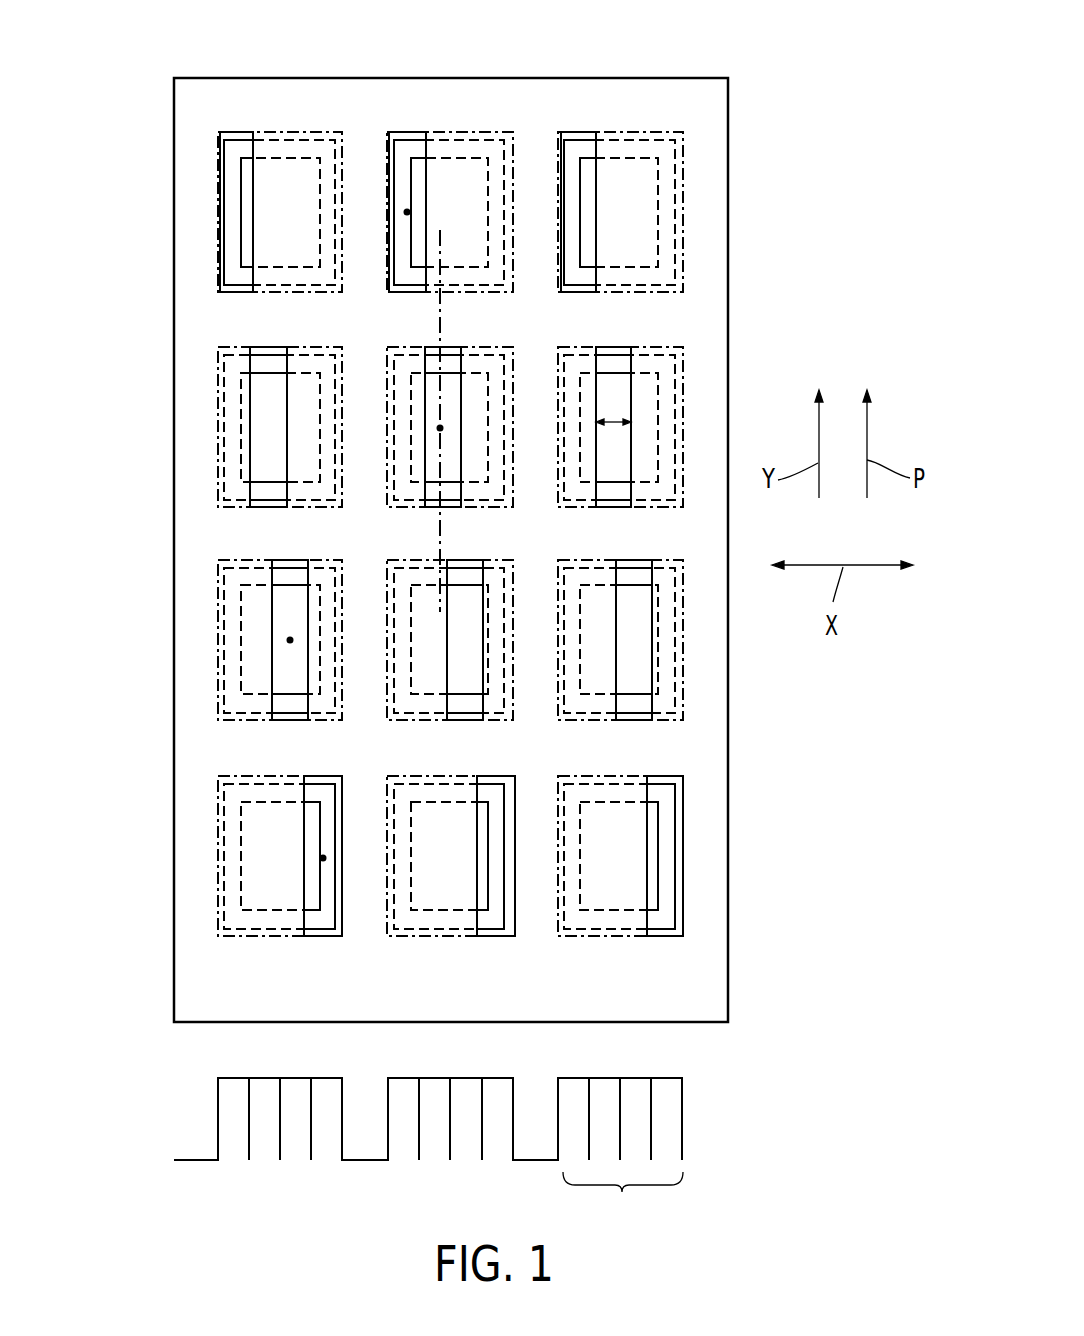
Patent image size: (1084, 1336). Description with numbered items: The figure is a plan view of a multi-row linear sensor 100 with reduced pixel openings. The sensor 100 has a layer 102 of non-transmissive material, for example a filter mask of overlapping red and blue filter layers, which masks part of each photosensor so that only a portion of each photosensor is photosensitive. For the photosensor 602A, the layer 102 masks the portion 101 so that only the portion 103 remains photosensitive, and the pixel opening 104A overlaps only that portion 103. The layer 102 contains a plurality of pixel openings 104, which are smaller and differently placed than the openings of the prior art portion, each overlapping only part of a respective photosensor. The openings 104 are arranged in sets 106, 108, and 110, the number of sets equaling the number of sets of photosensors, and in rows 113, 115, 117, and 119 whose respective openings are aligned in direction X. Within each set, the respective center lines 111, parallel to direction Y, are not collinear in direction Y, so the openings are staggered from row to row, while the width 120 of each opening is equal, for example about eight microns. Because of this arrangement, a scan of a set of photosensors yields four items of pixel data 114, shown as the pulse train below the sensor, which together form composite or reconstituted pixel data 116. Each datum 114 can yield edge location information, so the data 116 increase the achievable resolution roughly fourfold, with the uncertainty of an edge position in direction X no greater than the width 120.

The multi-row linear sensor 100 is at (805, 63).
The masked portion of photosensor 101 is at (290, 143).
The layer of non-transmissive material 102 is at (700, 745).
The photosensitive portion of photosensor 103 is at (233, 150).
The pixel openings 104 is at (687, 887).
The pixel opening 104A is at (217, 245).
The set of openings 106 is at (243, 103).
The set of openings 108 is at (412, 128).
The set of openings 110 is at (585, 128).
The center line 111 is at (437, 310).
The row of openings 113 is at (379, 155).
The pixel data 114 is at (297, 1152).
The row of openings 115 is at (163, 423).
The composite pixel data 116 is at (623, 1201).
The row of openings 117 is at (163, 633).
The row of openings 119 is at (426, 856).
The width of opening 120 is at (607, 418).
The photosensor 602A is at (227, 187).